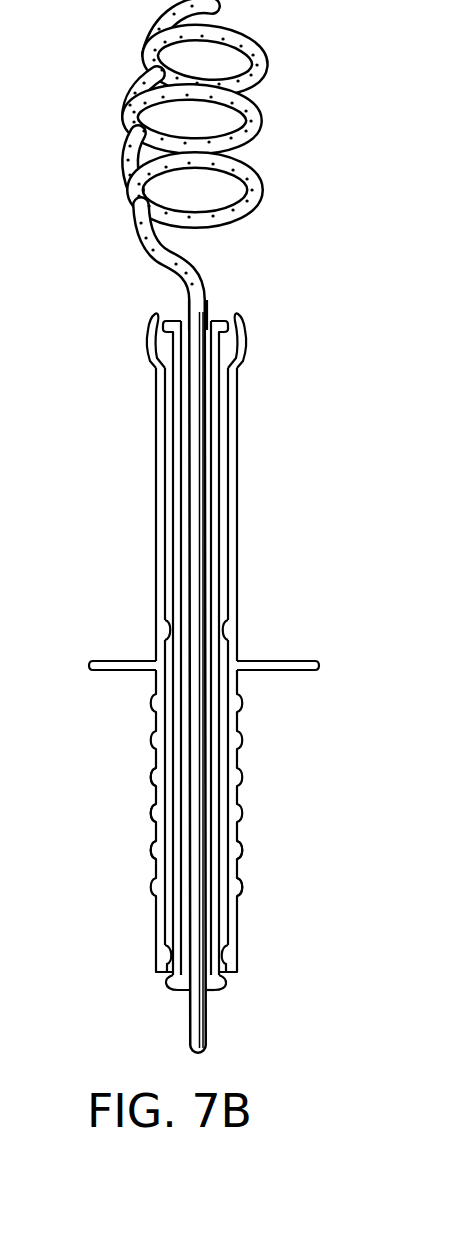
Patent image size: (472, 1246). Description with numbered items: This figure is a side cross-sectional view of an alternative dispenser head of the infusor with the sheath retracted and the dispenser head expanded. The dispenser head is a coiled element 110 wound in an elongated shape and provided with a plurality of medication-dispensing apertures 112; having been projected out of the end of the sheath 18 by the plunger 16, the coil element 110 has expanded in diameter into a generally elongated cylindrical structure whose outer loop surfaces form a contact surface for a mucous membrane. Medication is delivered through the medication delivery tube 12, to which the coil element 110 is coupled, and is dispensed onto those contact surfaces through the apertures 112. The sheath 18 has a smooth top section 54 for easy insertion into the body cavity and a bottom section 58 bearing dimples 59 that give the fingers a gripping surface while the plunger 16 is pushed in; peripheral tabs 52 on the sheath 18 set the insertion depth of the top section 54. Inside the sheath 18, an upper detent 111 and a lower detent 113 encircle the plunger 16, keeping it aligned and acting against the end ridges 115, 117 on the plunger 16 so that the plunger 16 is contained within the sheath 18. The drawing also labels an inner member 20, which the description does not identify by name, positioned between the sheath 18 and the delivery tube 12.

The coiled element 110 is at (285, 87).
The medication-dispensing apertures 112 is at (258, 180).
The end ridge 115 is at (221, 320).
The inner sheath 20 is at (243, 337).
The top section 54 is at (237, 508).
The upper detent 111 is at (228, 628).
The peripheral tabs 52 is at (92, 672).
The dimples 59 is at (147, 807).
The bottom section 58 is at (148, 835).
The sheath 18 is at (250, 875).
The lower detent 113 is at (165, 958).
The end ridge 117 is at (175, 988).
The medication delivery tube 12 is at (187, 1045).
The plunger 16 is at (223, 989).